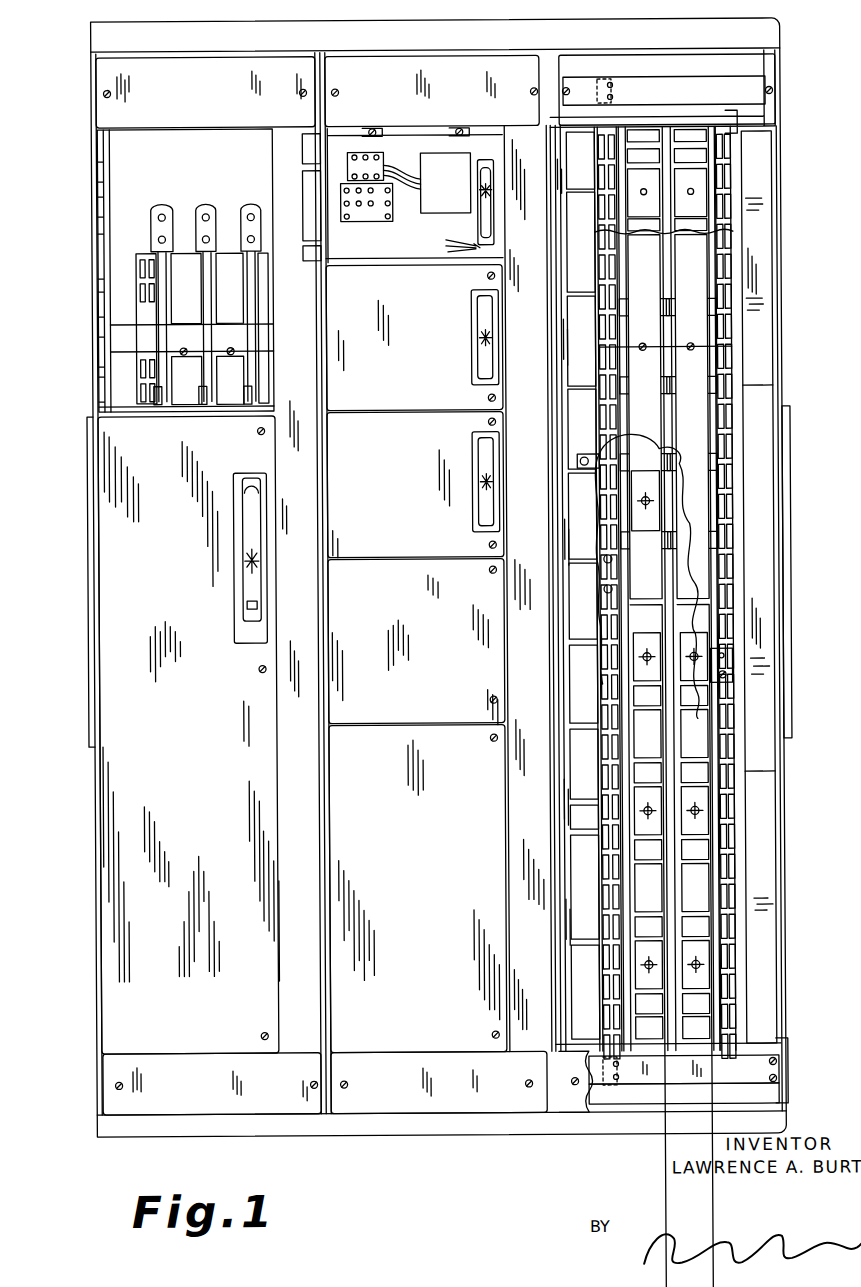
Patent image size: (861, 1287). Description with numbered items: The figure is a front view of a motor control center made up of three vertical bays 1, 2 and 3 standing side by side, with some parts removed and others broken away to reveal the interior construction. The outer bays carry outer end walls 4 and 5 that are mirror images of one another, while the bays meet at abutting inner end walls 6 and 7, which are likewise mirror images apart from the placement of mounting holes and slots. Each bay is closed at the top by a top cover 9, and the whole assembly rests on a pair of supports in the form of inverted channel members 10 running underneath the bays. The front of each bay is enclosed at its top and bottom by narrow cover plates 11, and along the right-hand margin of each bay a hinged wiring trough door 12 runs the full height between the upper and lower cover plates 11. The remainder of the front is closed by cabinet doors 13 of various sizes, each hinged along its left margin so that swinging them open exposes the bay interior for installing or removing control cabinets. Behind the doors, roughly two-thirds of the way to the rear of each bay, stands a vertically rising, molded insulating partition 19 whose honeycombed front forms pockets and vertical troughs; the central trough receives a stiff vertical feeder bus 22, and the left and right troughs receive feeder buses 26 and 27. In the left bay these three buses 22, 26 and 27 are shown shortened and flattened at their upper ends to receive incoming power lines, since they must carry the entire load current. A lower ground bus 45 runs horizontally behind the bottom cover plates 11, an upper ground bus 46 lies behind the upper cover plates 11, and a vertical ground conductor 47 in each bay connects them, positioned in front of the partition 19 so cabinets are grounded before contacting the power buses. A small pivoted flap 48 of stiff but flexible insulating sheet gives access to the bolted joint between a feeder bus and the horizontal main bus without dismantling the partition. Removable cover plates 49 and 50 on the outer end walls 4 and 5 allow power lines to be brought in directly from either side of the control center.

The vertical bay 1 is at (150, 964).
The vertical bay 2 is at (45, 355).
The vertical bay 3 is at (620, 118).
The outer end wall 4 is at (91, 860).
The outer end wall 5 is at (786, 980).
The inner end wall 6 is at (553, 795).
The inner end wall 7 is at (560, 822).
The top cover 9 is at (425, 49).
The inverted channel member 10 is at (295, 1137).
The cover plate 11 is at (210, 101).
The hinged wiring trough door 12 is at (313, 784).
The cabinet door 13 is at (194, 726).
The molded insulating partition 19 is at (690, 180).
The vertical feeder bus 22 is at (209, 203).
The vertical feeder bus 26 is at (164, 205).
The vertical feeder bus 27 is at (252, 205).
The lower ground bus 45 is at (757, 1065).
The upper ground bus 46 is at (700, 88).
The vertical ground conductor 47 is at (600, 100).
The pivoted flap 48 is at (727, 657).
The removable cover plate 49 is at (93, 578).
The removable cover plate 50 is at (788, 430).